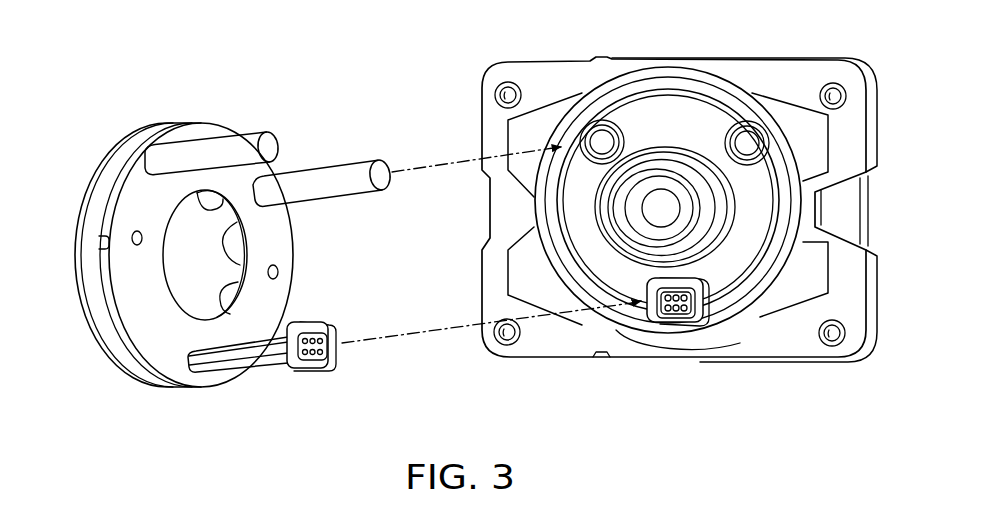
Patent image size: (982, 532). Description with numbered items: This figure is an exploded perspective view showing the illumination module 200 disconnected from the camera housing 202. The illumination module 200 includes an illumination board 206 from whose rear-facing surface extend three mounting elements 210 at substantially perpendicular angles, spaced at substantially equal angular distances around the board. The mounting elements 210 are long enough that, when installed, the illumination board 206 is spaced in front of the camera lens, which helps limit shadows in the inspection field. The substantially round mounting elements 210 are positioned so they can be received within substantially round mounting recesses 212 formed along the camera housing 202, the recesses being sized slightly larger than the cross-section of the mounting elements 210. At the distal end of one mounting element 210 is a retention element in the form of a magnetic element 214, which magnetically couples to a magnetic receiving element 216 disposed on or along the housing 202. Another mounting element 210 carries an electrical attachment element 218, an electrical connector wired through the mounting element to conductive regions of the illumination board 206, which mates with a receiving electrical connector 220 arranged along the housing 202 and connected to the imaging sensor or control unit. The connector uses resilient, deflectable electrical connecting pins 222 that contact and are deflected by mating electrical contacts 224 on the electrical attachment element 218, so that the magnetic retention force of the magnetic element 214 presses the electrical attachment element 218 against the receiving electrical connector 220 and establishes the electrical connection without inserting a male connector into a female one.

The illumination module 200 is at (302, 95).
The camera housing 202 is at (697, 340).
The illumination board 206 is at (180, 123).
The mounting element 210 is at (243, 134).
The mounting recess 212 is at (600, 128).
The magnetic element 214 is at (333, 368).
The magnetic receiving element 216 is at (645, 316).
The electrical attachment element 218 is at (345, 337).
The receiving electrical connector 220 is at (715, 303).
The deflectable electrical connecting pins 222 is at (676, 320).
The mating electrical contacts 224 is at (314, 339).